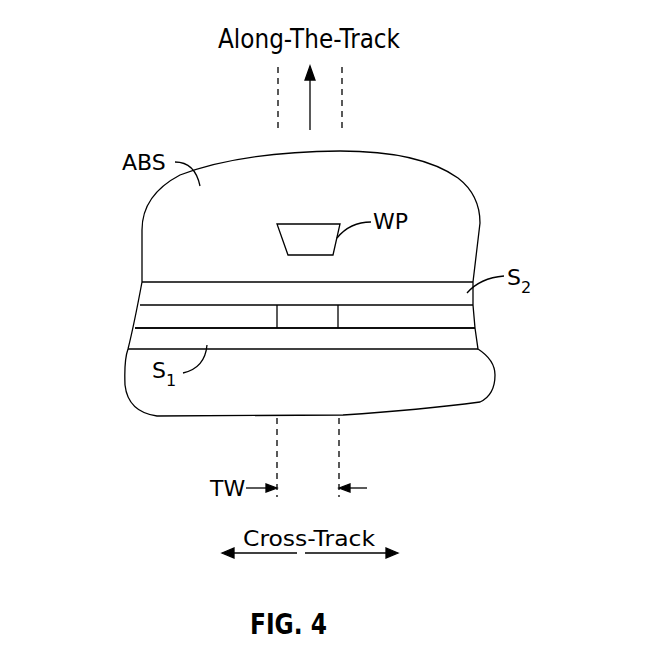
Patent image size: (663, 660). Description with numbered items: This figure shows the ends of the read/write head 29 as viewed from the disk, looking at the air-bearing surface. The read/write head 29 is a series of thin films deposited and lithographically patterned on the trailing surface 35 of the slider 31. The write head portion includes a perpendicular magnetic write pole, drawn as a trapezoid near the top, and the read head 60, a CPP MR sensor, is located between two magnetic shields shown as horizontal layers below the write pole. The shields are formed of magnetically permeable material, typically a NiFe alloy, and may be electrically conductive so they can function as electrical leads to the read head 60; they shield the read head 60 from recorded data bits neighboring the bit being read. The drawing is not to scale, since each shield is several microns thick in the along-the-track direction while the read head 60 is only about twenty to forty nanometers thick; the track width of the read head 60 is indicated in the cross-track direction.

The read/write head 29 is at (143, 223).
The trailing surface 35 is at (141, 349).
The read head 60 is at (328, 319).
The slider 31 is at (157, 406).